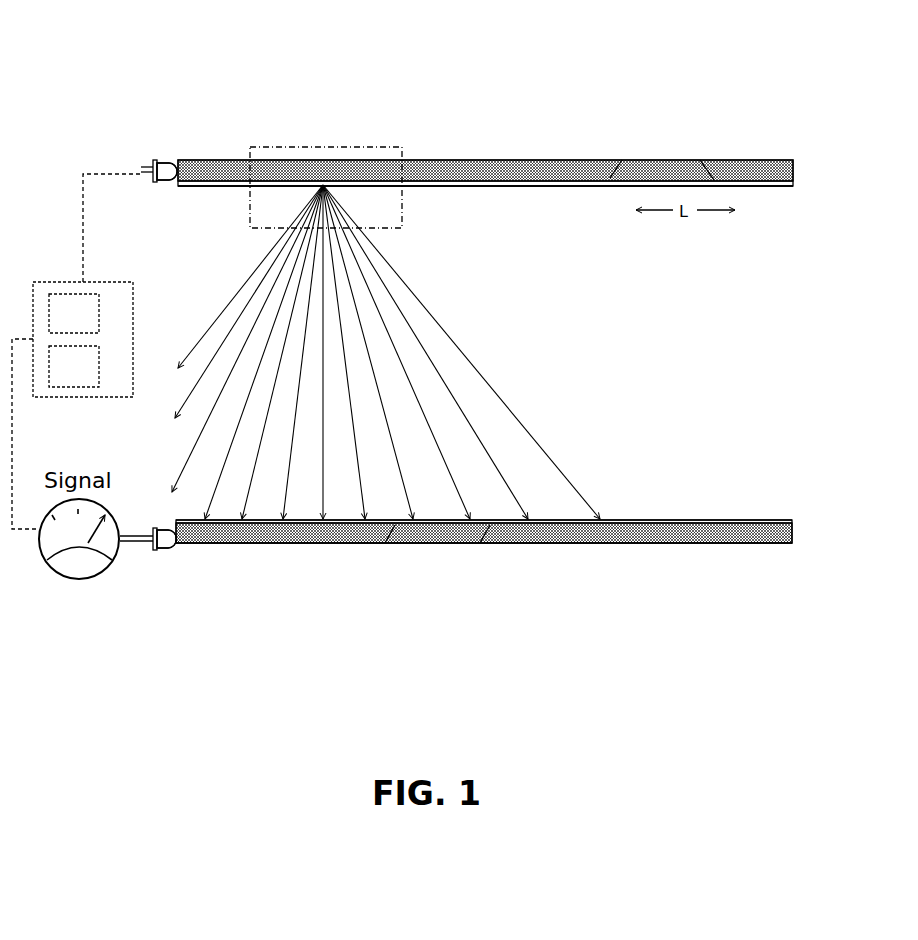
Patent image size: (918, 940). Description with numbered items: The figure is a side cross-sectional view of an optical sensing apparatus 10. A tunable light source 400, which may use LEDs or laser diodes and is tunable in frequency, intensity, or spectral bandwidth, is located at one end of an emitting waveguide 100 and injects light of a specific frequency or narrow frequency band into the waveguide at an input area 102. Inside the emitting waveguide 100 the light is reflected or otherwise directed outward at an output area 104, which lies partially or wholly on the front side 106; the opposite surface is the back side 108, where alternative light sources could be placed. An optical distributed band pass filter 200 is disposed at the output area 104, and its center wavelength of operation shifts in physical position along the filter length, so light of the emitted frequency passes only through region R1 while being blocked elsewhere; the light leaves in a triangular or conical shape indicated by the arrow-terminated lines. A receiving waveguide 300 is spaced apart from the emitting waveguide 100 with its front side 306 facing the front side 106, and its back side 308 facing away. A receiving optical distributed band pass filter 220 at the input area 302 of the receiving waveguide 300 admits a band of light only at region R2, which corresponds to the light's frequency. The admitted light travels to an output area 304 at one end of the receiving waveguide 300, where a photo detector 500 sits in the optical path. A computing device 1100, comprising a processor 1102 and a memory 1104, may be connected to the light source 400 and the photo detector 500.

The optical sensing apparatus 10 is at (294, 48).
The emitting waveguide 100 is at (795, 160).
The input area 102 is at (175, 160).
The output area 104 is at (700, 160).
The front side 106 is at (548, 186).
The back side 108 is at (548, 160).
The optical distributed band pass filter 200 is at (795, 186).
The receiving optical distributed band pass filter 220 is at (792, 520).
The receiving waveguide 300 is at (792, 543).
The input area 302 is at (485, 543).
The output area 304 is at (153, 528).
The front side 306 is at (657, 528).
The back side 308 is at (658, 543).
The tunable light source 400 is at (165, 186).
The photo detector 500 is at (165, 552).
The computing device 1100 is at (47, 282).
The processor 1102 is at (74, 313).
The memory 1104 is at (74, 366).
The region R1 is at (328, 182).
The region R2 is at (319, 530).